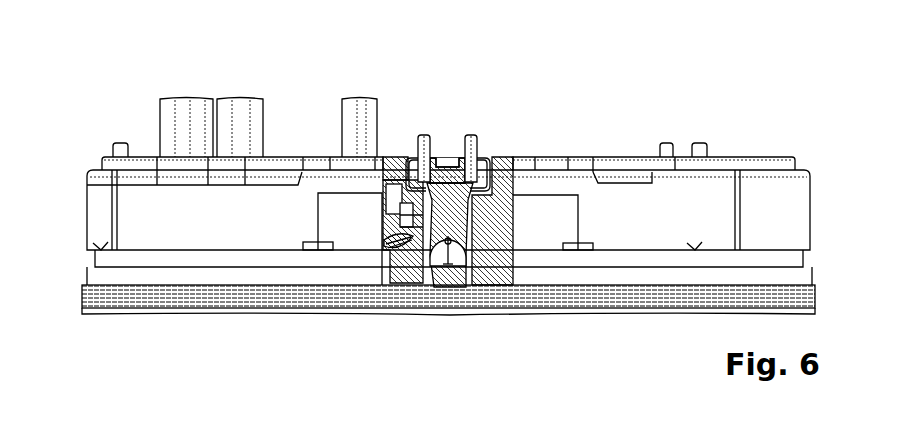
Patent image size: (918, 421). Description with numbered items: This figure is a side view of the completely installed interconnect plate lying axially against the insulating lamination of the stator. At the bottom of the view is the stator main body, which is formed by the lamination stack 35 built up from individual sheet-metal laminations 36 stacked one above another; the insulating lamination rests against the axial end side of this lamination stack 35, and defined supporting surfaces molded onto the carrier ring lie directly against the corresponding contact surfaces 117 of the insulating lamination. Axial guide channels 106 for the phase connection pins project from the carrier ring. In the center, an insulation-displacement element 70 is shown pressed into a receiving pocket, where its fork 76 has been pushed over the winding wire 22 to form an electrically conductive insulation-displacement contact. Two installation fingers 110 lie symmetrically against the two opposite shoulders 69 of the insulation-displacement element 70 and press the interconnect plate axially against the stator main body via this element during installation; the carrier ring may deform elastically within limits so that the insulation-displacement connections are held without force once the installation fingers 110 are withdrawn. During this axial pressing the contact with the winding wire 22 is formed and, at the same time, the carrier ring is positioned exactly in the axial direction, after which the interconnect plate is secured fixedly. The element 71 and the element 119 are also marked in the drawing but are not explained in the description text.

The axial guide channels 106 is at (231, 107).
The housing wall 119 is at (143, 250).
The installation fingers 110 is at (423, 146).
The insulation-displacement element 70 is at (450, 163).
The shoulders 69 is at (422, 180).
The contact surfaces 117 is at (107, 250).
The lamination stack 35 is at (448, 325).
The sheet-metal laminations 36 is at (188, 300).
The winding wire 22 is at (437, 285).
The fork 76 is at (450, 292).
The dome cavity 71 is at (460, 285).